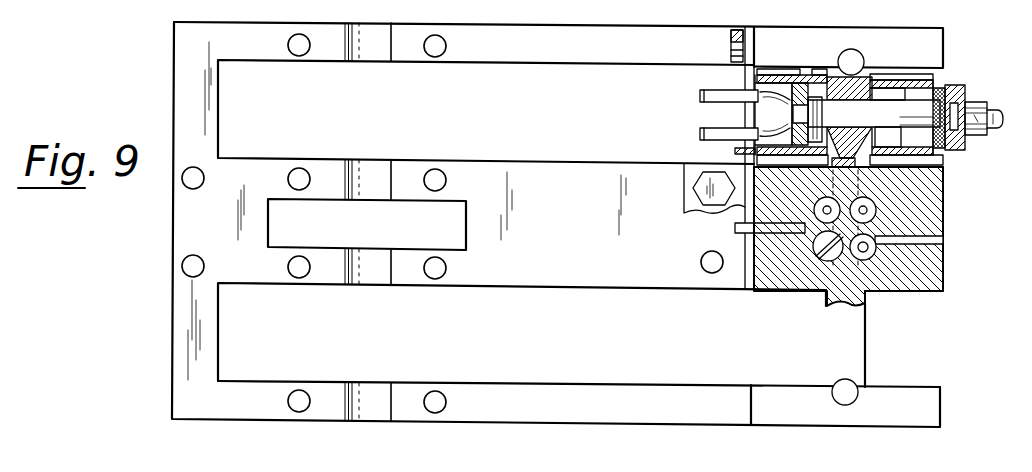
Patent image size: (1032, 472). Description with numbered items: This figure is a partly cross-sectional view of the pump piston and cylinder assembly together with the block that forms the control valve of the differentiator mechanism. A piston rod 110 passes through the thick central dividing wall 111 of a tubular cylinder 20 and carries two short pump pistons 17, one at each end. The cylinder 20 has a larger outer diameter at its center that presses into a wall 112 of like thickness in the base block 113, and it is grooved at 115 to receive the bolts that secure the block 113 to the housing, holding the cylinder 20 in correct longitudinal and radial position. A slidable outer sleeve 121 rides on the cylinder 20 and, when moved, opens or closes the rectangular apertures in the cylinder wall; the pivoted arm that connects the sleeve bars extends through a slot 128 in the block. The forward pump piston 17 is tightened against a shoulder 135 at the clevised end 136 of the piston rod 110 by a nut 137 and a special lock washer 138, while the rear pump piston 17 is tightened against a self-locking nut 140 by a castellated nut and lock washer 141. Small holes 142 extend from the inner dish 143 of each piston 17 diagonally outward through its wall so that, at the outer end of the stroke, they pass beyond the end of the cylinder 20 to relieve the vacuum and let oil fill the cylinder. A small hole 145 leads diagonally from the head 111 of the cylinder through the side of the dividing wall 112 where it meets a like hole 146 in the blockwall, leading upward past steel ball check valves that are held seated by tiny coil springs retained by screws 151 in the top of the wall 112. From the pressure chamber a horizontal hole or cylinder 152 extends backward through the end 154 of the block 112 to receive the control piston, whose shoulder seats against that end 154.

The piston 17 is at (745, 99).
The cylinder 20 is at (812, 72).
The piston rod 110 is at (915, 82).
The dividing wall 111 is at (836, 67).
The wall of base block 112 is at (803, 292).
The base block 113 is at (543, 289).
The groove 115 is at (864, 60).
The forward sleeve 121 is at (752, 71).
The slot 128 is at (730, 234).
The shoulder 135 is at (791, 114).
The clevised end 136 is at (690, 150).
The nut 137 is at (822, 117).
The lock washer 138 is at (829, 95).
The self-locking nut 140 is at (975, 102).
The castellated nut and lock washer 141 is at (996, 130).
The small hole 142 is at (748, 152).
The inner dish 143 is at (930, 90).
The small hole 145 is at (828, 168).
The hole 146 is at (871, 184).
The screw 151 is at (828, 262).
The cylinder 152 is at (945, 239).
The end of block 154 is at (943, 276).